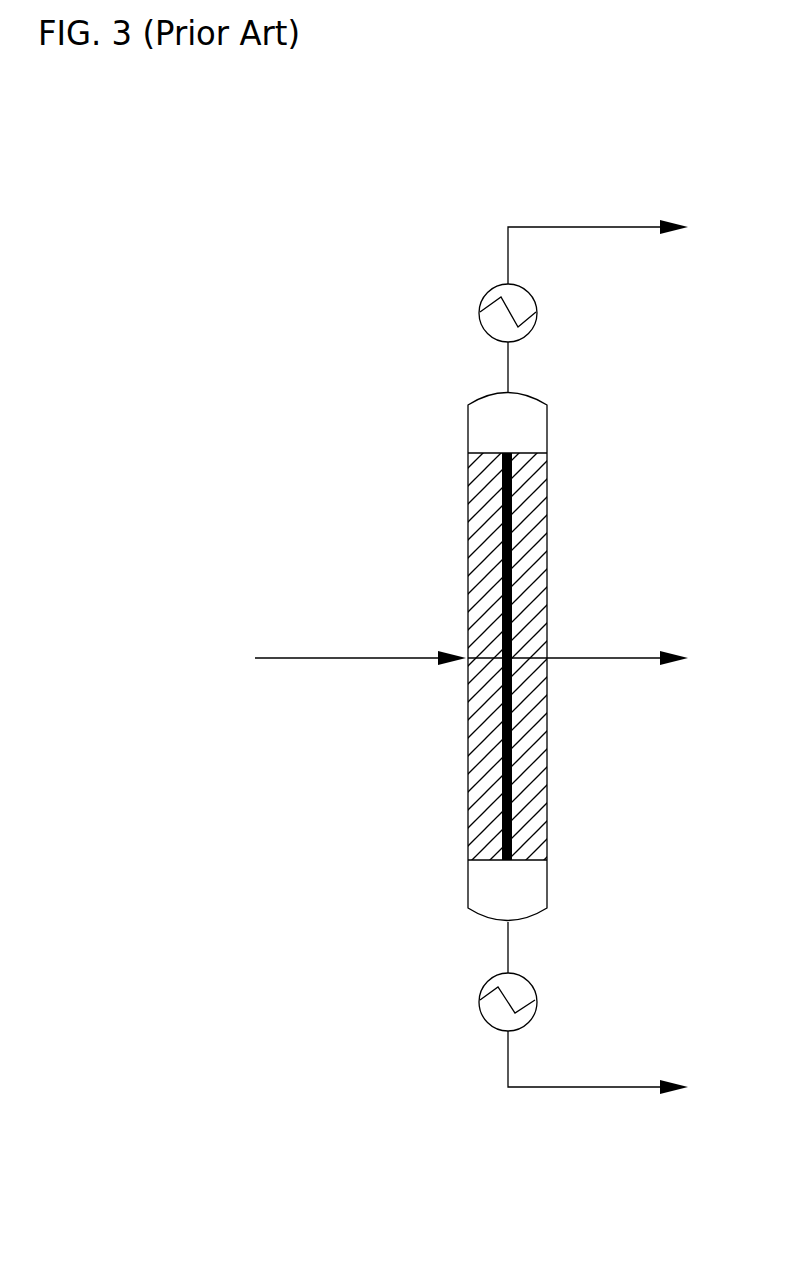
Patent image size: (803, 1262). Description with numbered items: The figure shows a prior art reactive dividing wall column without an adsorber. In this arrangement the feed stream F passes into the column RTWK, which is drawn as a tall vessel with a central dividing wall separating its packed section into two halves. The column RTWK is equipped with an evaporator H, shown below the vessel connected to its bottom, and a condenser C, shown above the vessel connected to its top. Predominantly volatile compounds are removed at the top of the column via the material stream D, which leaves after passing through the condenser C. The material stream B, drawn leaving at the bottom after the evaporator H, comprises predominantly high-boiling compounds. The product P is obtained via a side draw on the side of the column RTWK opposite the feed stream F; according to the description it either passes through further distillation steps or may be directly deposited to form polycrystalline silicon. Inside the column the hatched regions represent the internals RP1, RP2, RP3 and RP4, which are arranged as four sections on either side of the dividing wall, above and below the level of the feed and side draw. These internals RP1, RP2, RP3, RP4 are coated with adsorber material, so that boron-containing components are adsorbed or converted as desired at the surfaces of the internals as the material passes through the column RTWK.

The column RTWK is at (551, 657).
The internal RP1 is at (448, 555).
The internal RP2 is at (565, 555).
The internal RP3 is at (447, 759).
The internal RP4 is at (565, 759).
The condenser C is at (530, 338).
The evaporator H is at (530, 976).
The material stream D is at (598, 234).
The material stream B is at (598, 1062).
The feed stream F is at (360, 640).
The product P is at (584, 639).